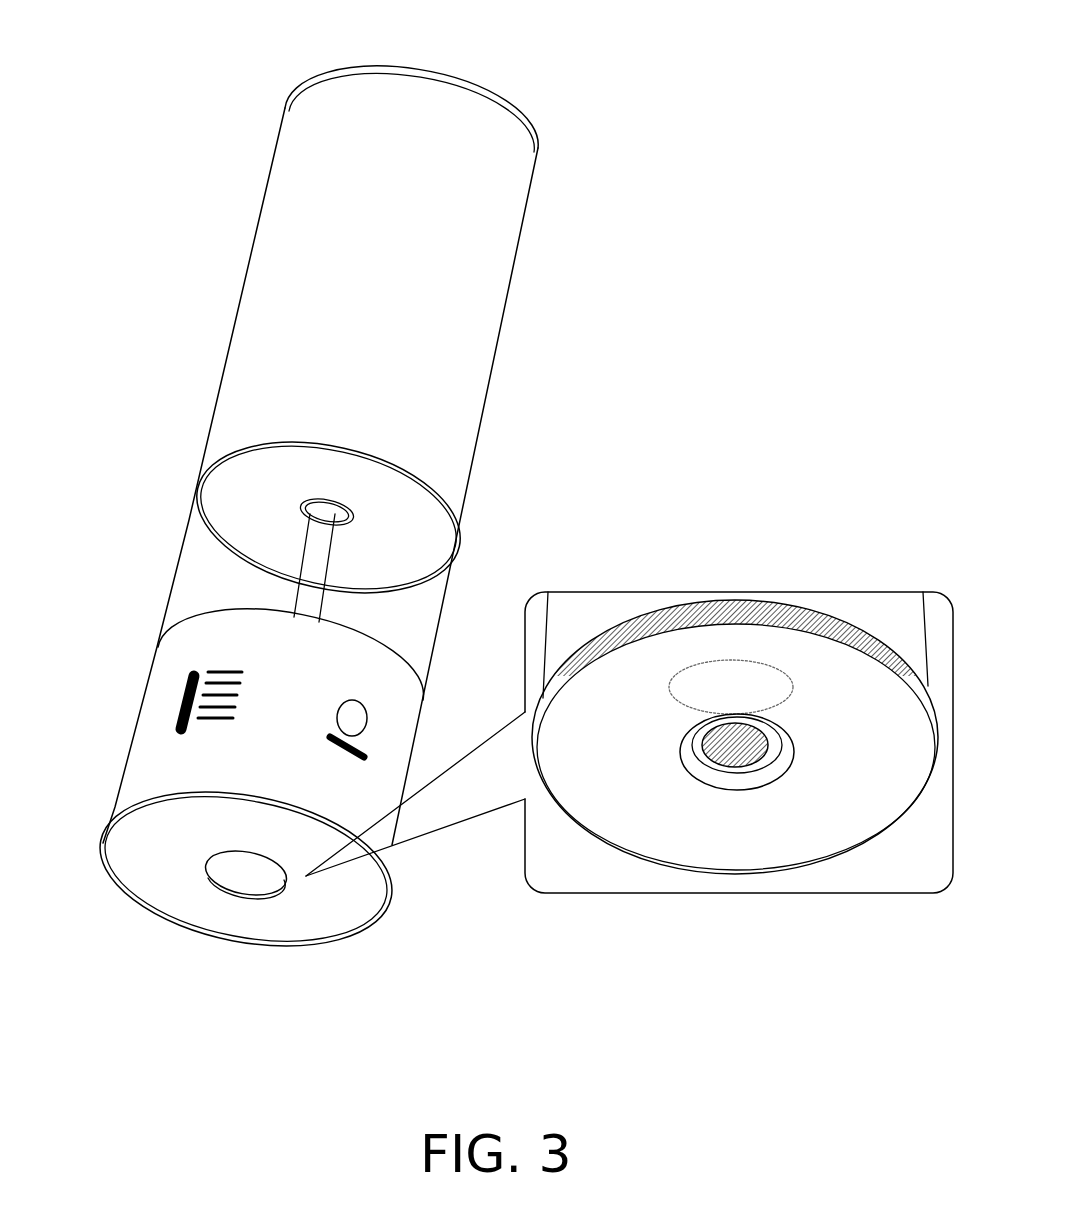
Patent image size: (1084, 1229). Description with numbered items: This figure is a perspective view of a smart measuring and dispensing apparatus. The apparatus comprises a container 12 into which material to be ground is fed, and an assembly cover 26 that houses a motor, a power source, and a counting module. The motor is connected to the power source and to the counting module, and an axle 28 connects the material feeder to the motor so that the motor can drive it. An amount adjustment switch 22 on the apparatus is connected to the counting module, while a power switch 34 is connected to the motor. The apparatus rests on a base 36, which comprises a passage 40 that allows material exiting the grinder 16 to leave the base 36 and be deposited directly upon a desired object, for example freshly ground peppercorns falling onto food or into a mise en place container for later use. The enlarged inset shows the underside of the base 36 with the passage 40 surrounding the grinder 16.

The container 12 is at (195, 526).
The assembly cover 26 is at (492, 277).
The axle 28 is at (317, 572).
The amount adjustment switch 22 is at (183, 704).
The base 36 is at (183, 763).
The power switch 34 is at (353, 722).
The passage 40 is at (687, 770).
The grinder 16 is at (743, 762).